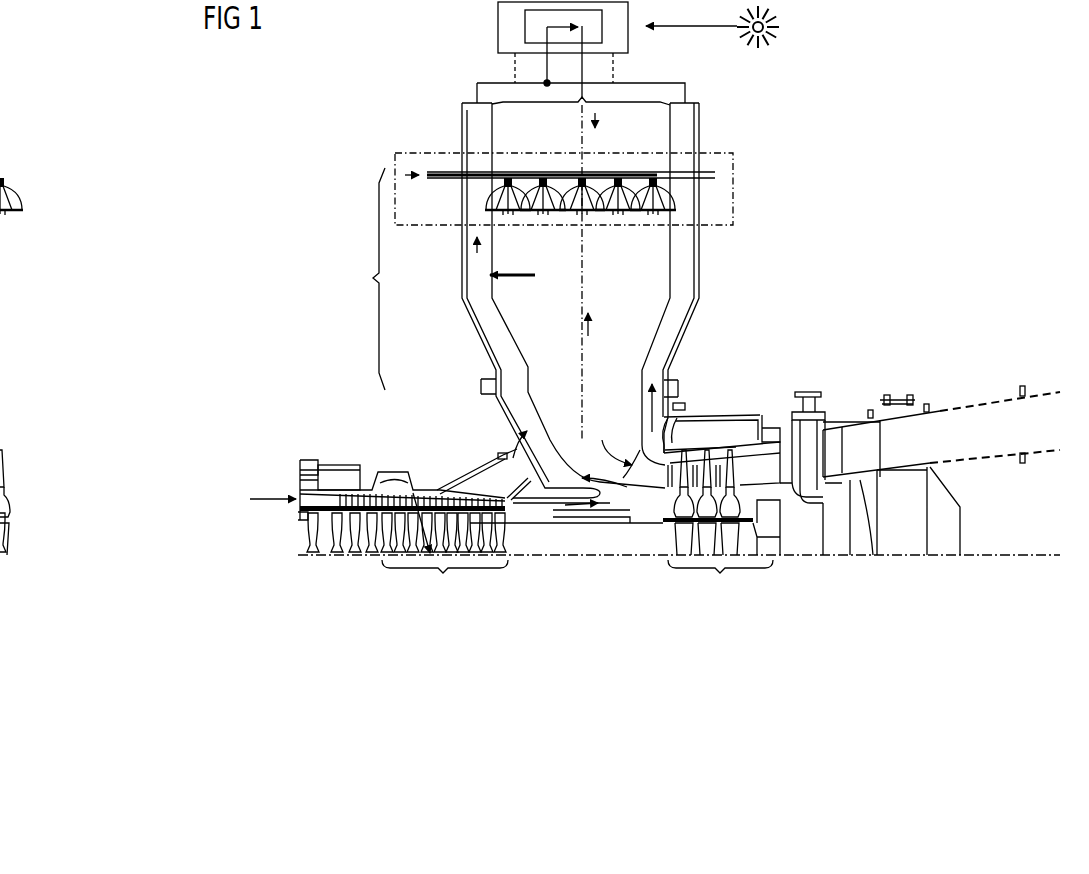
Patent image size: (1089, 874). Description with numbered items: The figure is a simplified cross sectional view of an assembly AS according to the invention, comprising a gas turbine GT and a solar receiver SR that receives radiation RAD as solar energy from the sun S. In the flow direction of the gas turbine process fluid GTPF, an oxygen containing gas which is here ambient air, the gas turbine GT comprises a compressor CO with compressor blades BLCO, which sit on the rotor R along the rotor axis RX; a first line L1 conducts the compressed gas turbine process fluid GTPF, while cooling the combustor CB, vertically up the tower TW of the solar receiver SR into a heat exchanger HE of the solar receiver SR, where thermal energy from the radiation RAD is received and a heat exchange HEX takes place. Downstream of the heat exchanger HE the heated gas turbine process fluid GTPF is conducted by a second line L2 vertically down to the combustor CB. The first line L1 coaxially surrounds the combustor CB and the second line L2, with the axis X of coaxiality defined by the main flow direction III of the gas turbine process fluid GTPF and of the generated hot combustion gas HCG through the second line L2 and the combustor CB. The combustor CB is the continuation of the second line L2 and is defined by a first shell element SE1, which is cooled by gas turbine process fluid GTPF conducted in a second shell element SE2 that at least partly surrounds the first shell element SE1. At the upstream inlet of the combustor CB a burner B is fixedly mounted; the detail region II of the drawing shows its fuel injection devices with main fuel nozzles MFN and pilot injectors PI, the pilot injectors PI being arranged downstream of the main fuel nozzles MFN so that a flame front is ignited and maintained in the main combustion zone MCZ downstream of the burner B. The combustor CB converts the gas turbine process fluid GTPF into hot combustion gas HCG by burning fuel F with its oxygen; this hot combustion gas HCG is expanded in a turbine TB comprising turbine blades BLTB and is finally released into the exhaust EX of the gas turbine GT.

The solar receiver SR is at (498, 11).
The heat exchanger HE is at (525, 35).
The tower TW is at (513, 68).
The first line L1 is at (547, 68).
The second line L2 is at (582, 62).
The radiation RAD is at (698, 27).
The sun S is at (768, 29).
The assembly AS is at (859, 63).
The detail region II is at (717, 152).
The burner B is at (742, 168).
The fuel F is at (410, 178).
The combustor CB is at (512, 290).
The gas turbine process fluid GTPF is at (473, 246).
The heat exchange HEX is at (520, 272).
The pilot injector PI is at (553, 213).
The main fuel nozzles MFN is at (633, 216).
The main combustion zone MCZ is at (582, 287).
The first shell element SE1 is at (660, 324).
The second shell element SE2 is at (700, 282).
The flow direction III is at (603, 323).
The axis X is at (582, 356).
The gas turbine GT is at (860, 357).
The hot combustion gas HCG is at (613, 442).
The turbine blades BLTB is at (720, 450).
The exhaust EX is at (972, 420).
The compressor CO is at (469, 523).
The compressor blades BLCO is at (253, 555).
The turbine TB is at (390, 500).
The rotor R is at (1009, 523).
The rotor axis RX is at (1018, 553).